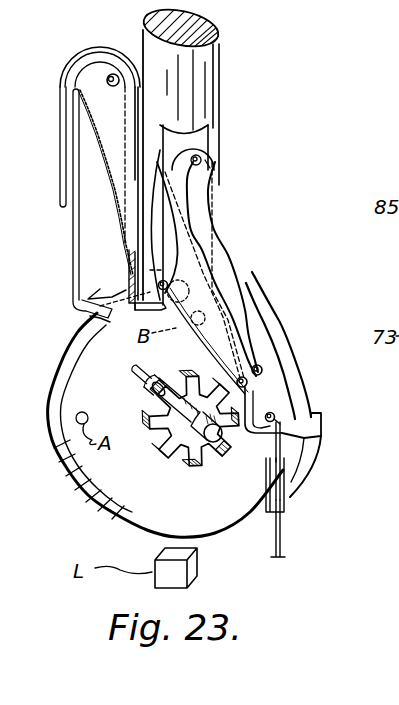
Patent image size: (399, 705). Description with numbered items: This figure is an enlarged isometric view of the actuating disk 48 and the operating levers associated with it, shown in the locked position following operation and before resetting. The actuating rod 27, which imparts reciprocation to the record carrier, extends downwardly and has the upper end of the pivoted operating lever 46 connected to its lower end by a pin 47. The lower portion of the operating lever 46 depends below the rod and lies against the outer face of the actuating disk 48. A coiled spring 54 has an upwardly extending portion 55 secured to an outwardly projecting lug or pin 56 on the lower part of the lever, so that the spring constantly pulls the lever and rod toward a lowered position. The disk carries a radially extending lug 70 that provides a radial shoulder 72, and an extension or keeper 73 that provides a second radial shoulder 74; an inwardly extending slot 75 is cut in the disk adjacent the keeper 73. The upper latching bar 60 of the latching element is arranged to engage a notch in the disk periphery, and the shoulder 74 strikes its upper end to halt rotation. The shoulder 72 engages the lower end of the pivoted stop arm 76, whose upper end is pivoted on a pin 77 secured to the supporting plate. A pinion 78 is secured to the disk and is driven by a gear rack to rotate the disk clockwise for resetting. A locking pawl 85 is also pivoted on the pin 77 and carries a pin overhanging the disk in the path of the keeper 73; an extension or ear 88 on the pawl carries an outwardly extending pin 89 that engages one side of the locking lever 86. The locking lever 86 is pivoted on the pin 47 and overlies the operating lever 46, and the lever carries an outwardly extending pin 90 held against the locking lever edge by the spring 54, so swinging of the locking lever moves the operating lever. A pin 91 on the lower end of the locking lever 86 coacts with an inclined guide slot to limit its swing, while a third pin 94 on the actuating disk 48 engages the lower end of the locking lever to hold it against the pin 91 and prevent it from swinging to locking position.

The actuating rod 27 is at (200, 85).
The operating lever 46 is at (262, 345).
The pin 47 is at (205, 162).
The actuating disk 48 is at (100, 478).
The coiled spring 54 is at (283, 553).
The upwardly extending portion 55 is at (283, 535).
The lug or pin 56 is at (321, 428).
The upper latching bar 60 is at (198, 570).
The lug 70 is at (88, 299).
The shoulder 72 is at (95, 315).
The extension or keeper 73 is at (305, 476).
The shoulder 74 is at (286, 418).
The slot 75 is at (268, 486).
The stop arm 76 is at (90, 275).
The pin 77 is at (107, 80).
The pinion 78 is at (200, 472).
The locking pawl 85 is at (110, 141).
The locking lever 86 is at (240, 315).
The extension or ear 88 is at (155, 272).
The pin 89 is at (225, 277).
The pin 90 is at (262, 370).
The pin 91 is at (254, 384).
The third pin 94 is at (143, 380).